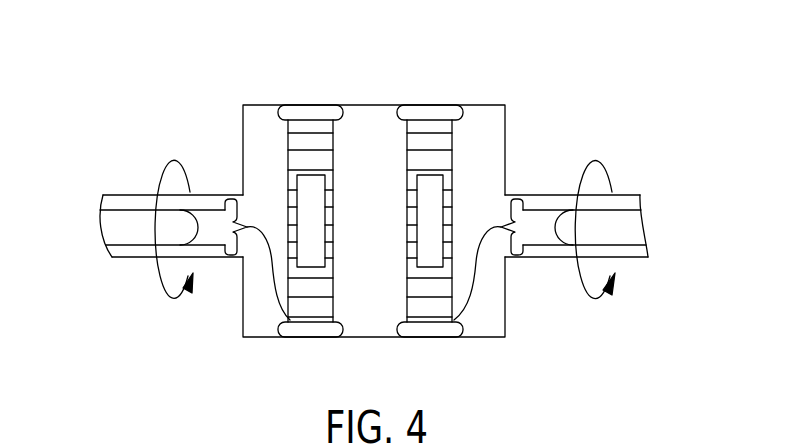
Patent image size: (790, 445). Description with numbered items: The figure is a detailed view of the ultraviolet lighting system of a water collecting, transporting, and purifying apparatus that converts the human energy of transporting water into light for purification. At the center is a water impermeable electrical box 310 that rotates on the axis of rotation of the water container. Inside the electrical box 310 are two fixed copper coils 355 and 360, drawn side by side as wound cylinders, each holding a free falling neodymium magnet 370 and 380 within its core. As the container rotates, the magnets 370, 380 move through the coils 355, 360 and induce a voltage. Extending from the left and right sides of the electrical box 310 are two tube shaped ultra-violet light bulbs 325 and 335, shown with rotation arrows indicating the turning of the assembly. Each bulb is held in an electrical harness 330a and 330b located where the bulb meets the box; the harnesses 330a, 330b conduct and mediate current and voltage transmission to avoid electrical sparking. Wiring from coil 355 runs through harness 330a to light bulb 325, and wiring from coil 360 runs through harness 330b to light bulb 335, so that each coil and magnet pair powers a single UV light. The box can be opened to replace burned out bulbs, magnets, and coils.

The electrical box 310 is at (243, 129).
The ultra-violet light bulb 325 is at (120, 223).
The ultra-violet light bulb 335 is at (632, 222).
The electrical harness 330a is at (286, 288).
The electrical harness 330b is at (472, 278).
The copper coil 355 is at (327, 108).
The copper coil 360 is at (453, 155).
The neodymium magnet 370 is at (315, 198).
The neodymium magnet 380 is at (433, 208).